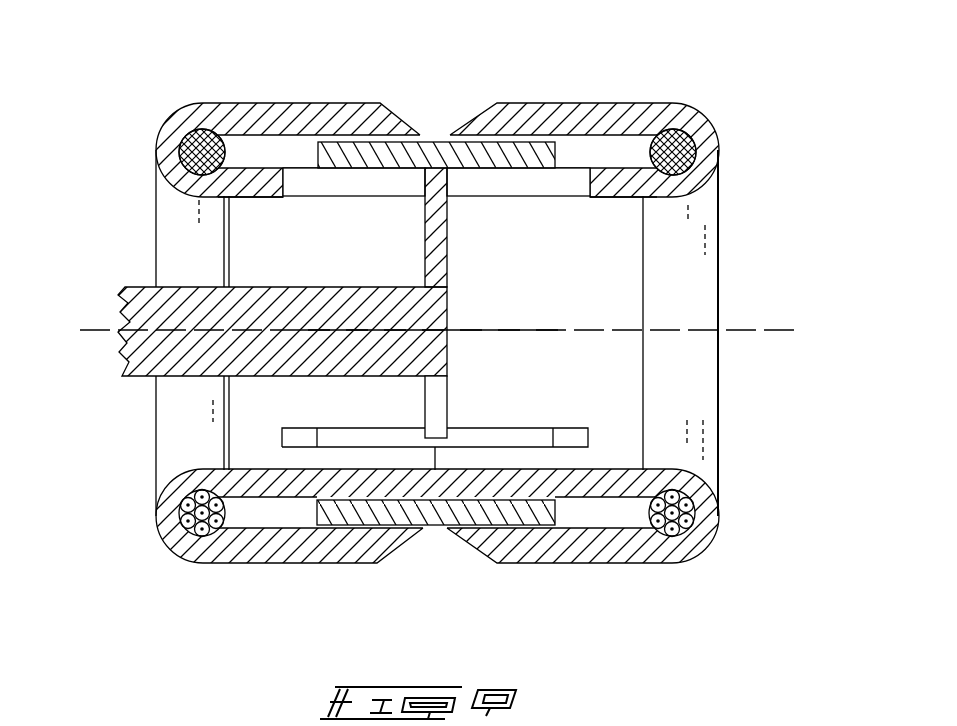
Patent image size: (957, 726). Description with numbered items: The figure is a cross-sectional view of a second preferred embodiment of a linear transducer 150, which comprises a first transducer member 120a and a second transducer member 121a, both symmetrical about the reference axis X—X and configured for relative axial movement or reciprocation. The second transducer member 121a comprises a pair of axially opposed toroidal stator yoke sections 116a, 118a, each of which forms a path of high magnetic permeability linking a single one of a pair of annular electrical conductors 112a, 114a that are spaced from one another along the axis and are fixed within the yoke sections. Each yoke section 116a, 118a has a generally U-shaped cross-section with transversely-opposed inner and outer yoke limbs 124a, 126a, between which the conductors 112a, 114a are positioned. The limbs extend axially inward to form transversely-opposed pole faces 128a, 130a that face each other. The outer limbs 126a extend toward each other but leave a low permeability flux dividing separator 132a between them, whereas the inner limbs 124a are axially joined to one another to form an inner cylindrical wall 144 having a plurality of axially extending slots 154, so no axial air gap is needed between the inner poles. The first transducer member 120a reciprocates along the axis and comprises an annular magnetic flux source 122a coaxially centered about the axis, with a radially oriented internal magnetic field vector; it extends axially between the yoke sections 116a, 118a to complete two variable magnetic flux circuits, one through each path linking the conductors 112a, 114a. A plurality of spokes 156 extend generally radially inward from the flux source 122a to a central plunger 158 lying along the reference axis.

The linear transducer 150 is at (518, 39).
The outer yoke limb 126a is at (242, 117).
The pole face 130a is at (306, 135).
The low permeability flux dividing separator 132a is at (423, 120).
The annular electrical conductor 112a is at (178, 128).
The annular electrical conductor 114a is at (801, 115).
The inner cylindrical wall 144 is at (165, 207).
The pole face 128a is at (207, 197).
The first transducer member 120a is at (137, 285).
The central plunger 158 is at (152, 320).
The inner yoke limb 124a is at (277, 183).
The axially extending slot 154 is at (352, 180).
The annular magnetic flux source 122a is at (503, 157).
The spoke 156 is at (440, 268).
The second transducer member 121a is at (686, 301).
The toroidal stator yoke section 118a is at (690, 352).
The toroidal stator yoke section 116a is at (180, 405).